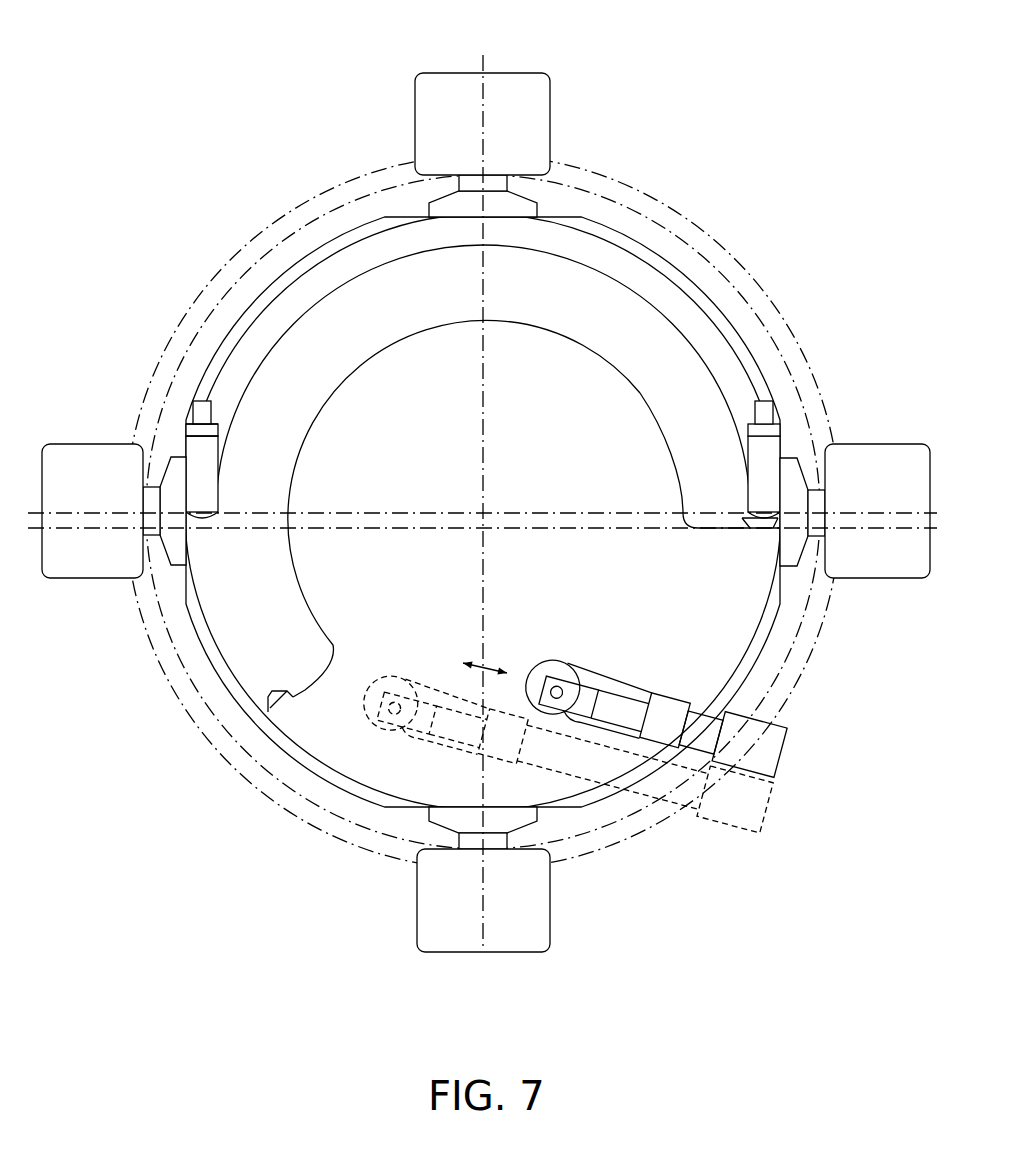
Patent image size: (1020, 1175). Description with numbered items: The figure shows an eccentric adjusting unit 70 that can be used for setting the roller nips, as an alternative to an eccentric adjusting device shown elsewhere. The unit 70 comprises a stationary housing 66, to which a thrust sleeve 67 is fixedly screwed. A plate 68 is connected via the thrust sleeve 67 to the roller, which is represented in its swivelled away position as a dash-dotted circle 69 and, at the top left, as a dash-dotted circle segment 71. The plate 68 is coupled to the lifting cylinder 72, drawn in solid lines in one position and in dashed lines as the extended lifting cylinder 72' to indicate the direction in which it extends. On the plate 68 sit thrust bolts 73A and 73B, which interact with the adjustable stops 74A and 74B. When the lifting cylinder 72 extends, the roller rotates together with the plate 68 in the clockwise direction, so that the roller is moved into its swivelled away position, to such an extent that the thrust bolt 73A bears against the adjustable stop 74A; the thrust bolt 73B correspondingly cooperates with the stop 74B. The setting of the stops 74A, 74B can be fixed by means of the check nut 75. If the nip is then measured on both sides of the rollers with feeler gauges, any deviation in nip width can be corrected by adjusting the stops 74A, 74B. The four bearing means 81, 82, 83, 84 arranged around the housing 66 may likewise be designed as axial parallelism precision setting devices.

The stationary housing 66 is at (185, 637).
The thrust sleeve 67 is at (588, 232).
The plate 68 is at (558, 318).
The dash-dotted circle 69 is at (716, 258).
The eccentric adjusting unit 70 is at (290, 130).
The circle segment 71 is at (185, 300).
The lifting cylinder 72 is at (660, 715).
The lifting cylinder in extended position 72' is at (603, 751).
The thrust bolt 73A is at (267, 708).
The thrust bolt 73B is at (757, 528).
The adjustable stop 74A is at (203, 518).
The adjustable stop 74B is at (747, 513).
The check nut 75 is at (219, 429).
The bearing means 81 is at (450, 92).
The bearing means 82 is at (860, 458).
The bearing means 83 is at (505, 936).
The bearing means 84 is at (78, 462).